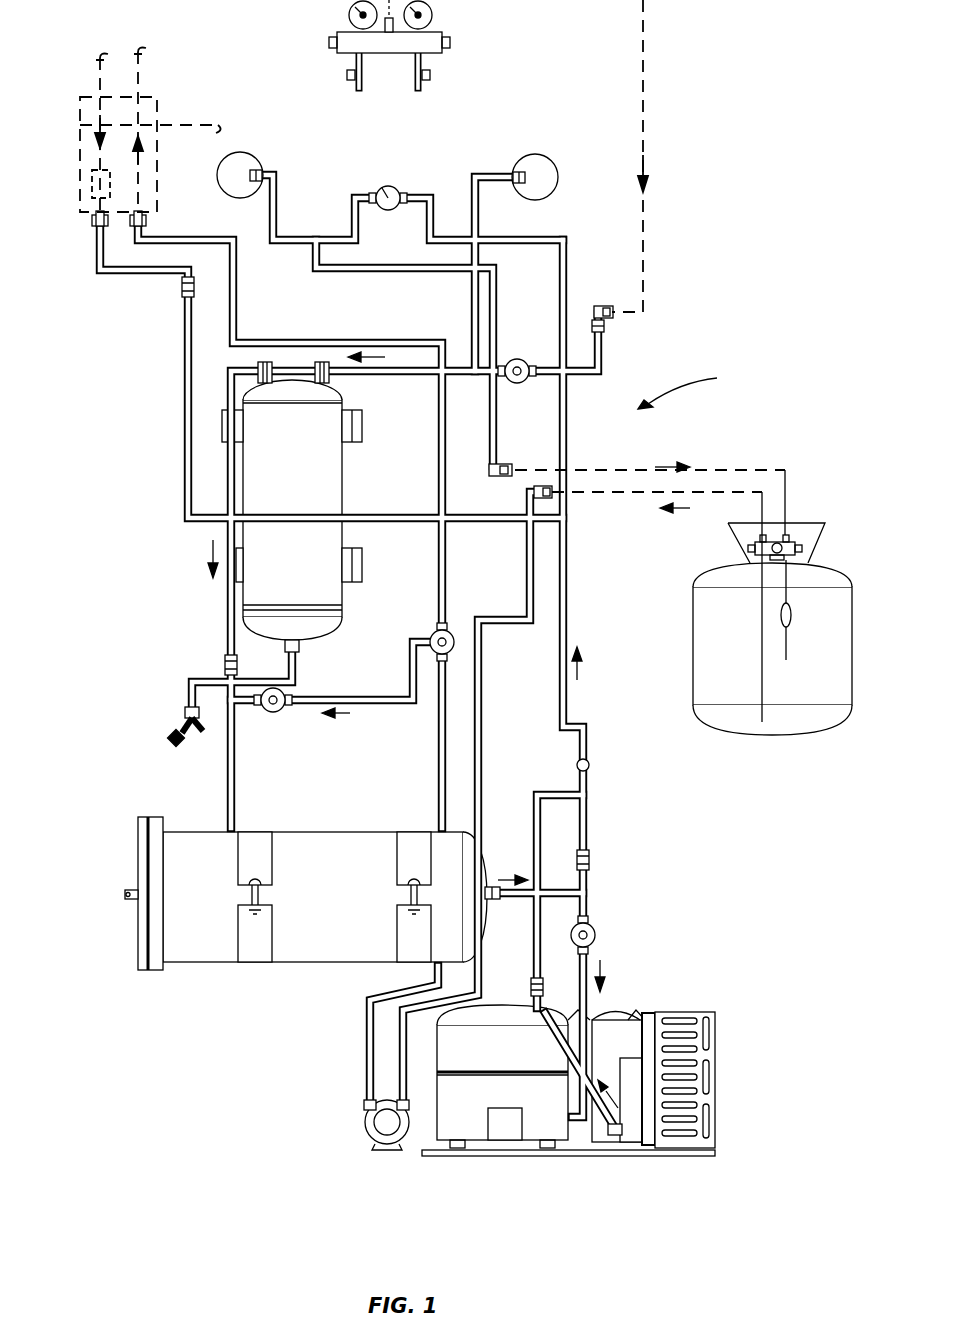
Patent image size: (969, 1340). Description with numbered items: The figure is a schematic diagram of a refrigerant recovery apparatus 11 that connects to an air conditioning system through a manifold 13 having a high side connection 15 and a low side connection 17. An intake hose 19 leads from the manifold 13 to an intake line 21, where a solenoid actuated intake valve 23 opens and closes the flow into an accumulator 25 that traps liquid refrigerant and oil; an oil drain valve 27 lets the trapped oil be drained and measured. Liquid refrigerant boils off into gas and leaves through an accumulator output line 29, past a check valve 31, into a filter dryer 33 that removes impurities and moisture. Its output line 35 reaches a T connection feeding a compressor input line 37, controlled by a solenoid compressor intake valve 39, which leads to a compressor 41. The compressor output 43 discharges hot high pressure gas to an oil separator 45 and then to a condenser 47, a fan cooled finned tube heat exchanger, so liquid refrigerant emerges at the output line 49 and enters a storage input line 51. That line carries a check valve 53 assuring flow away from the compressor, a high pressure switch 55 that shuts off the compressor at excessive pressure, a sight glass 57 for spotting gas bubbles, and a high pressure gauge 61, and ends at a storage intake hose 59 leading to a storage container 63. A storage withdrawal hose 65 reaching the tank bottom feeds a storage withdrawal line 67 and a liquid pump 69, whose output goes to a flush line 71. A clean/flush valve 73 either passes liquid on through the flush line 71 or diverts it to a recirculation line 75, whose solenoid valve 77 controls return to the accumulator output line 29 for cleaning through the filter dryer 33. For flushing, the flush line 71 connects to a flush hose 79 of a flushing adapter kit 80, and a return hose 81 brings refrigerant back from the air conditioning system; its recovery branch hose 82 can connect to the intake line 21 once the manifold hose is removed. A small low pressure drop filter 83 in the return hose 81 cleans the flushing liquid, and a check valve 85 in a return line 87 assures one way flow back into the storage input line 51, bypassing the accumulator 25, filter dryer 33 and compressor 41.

The recovery apparatus 11 is at (692, 389).
The manifold 13 is at (433, 32).
The high side connection 15 is at (421, 88).
The low side connection 17 is at (356, 88).
The intake hose 19 is at (647, 100).
The intake line 21 is at (602, 352).
The intake valve 23 is at (518, 384).
The accumulator 25 is at (344, 478).
The oil drain valve 27 is at (185, 712).
The accumulator output line 29 is at (225, 604).
The check valve 31 is at (224, 665).
The filter dryer 33 is at (205, 965).
The output line 35 is at (562, 868).
The compressor input line 37 is at (575, 1005).
The compressor intake valve 39 is at (596, 935).
The compressor 41 is at (455, 1150).
The output 43 is at (553, 1033).
The oil separator 45 is at (598, 1132).
The condenser 47 is at (718, 1075).
The output line 49 is at (553, 1060).
The storage input line 51 is at (587, 728).
The check valve 53 is at (590, 858).
The high pressure switch 55 is at (590, 765).
The sight glass 57 is at (392, 186).
The storage intake hose 59 is at (679, 470).
The high pressure gauge 61 is at (245, 152).
The storage container 63 is at (853, 680).
The storage withdrawal hose 65 is at (590, 496).
The storage withdrawal line 67 is at (483, 655).
The liquid pump 69 is at (365, 1142).
The flush line 71 is at (367, 1065).
The clean/flush valve 73 is at (432, 630).
The recirculation line 75 is at (395, 705).
The solenoid valve 77 is at (273, 712).
The flush hose 79 is at (147, 190).
The flushing adapter kit 80 is at (163, 93).
The return hose 81 is at (97, 76).
The recovery branch hose 82 is at (176, 125).
The filter 83 is at (92, 186).
The check valve 85 is at (181, 287).
The return line 87 is at (184, 386).